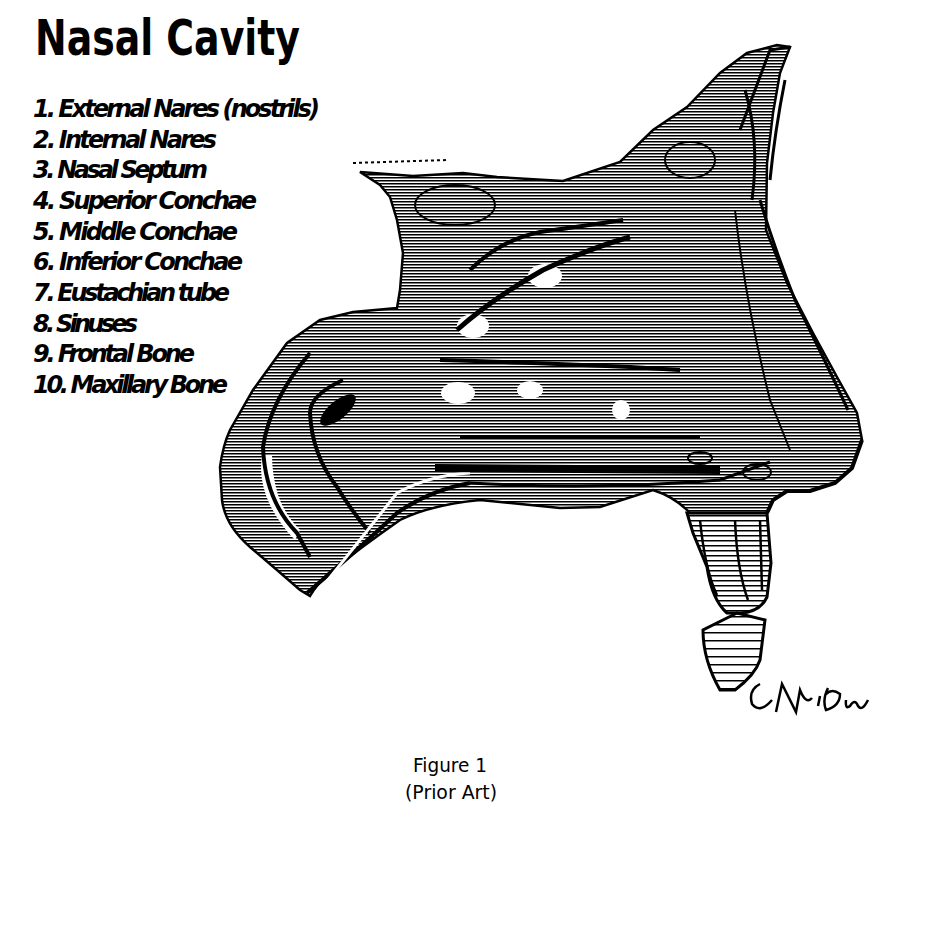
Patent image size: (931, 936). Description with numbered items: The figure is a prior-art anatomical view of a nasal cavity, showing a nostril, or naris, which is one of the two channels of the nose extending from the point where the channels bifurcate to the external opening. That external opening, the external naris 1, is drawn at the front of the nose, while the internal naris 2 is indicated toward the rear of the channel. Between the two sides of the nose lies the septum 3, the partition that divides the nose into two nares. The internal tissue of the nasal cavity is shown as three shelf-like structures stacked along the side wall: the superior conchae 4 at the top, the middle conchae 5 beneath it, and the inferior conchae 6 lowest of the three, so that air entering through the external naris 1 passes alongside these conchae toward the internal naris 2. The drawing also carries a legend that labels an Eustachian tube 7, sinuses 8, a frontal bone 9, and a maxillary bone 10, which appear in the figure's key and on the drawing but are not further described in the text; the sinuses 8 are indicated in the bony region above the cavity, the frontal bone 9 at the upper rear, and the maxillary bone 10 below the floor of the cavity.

The external naris 1 is at (814, 485).
The internal naris 2 is at (763, 470).
The septum 3 is at (762, 330).
The superior conchae 4 is at (546, 245).
The middle conchae 5 is at (560, 303).
The inferior conchae 6 is at (602, 437).
The Eustachian tube 7 is at (700, 458).
The Sinuses 8 is at (700, 157).
The Frontal Bone 9 is at (762, 68).
The Maxillary Bone 10 is at (672, 530).